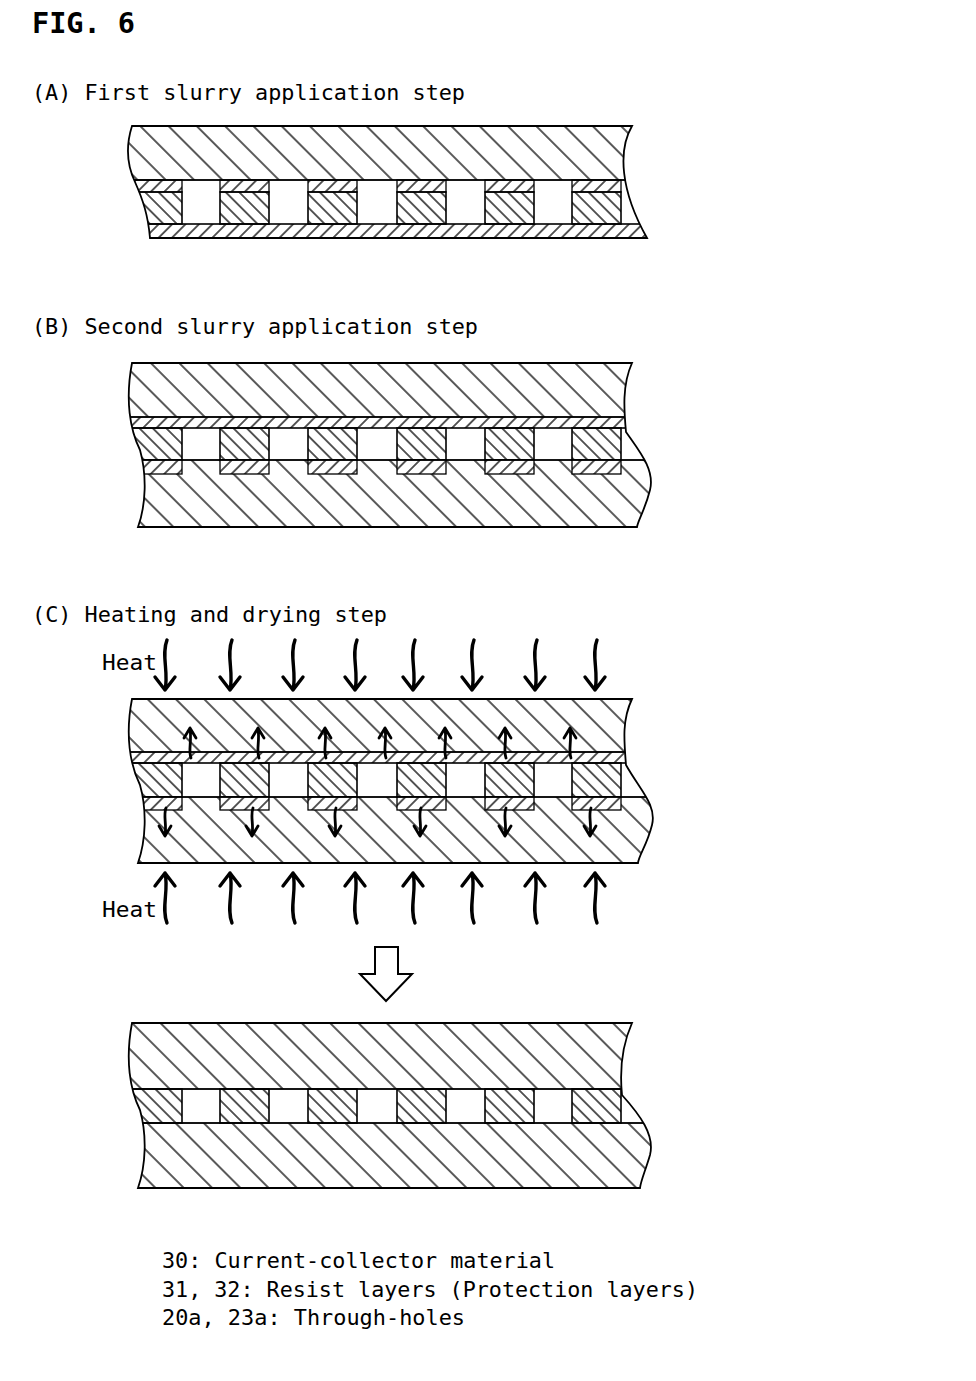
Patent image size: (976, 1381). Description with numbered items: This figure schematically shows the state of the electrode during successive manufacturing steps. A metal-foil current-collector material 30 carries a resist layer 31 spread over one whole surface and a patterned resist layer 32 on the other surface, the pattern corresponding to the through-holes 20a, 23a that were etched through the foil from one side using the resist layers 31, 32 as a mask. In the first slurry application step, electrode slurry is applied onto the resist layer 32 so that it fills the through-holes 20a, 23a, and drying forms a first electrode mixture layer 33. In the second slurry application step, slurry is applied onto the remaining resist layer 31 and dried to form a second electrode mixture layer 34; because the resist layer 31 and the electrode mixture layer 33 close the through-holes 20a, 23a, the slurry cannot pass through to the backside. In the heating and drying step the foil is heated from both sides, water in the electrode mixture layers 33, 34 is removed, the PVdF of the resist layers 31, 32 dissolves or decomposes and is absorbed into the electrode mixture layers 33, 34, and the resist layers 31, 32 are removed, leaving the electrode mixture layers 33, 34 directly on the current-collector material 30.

The current-collector material 30 is at (610, 210).
The resist layer 31 is at (630, 233).
The resist layer 32 is at (613, 185).
The first electrode mixture layer 33 is at (598, 152).
The second electrode mixture layer 34 is at (602, 392).
The through-hole 20a is at (401, 656).
The through-hole 23a is at (285, 212).